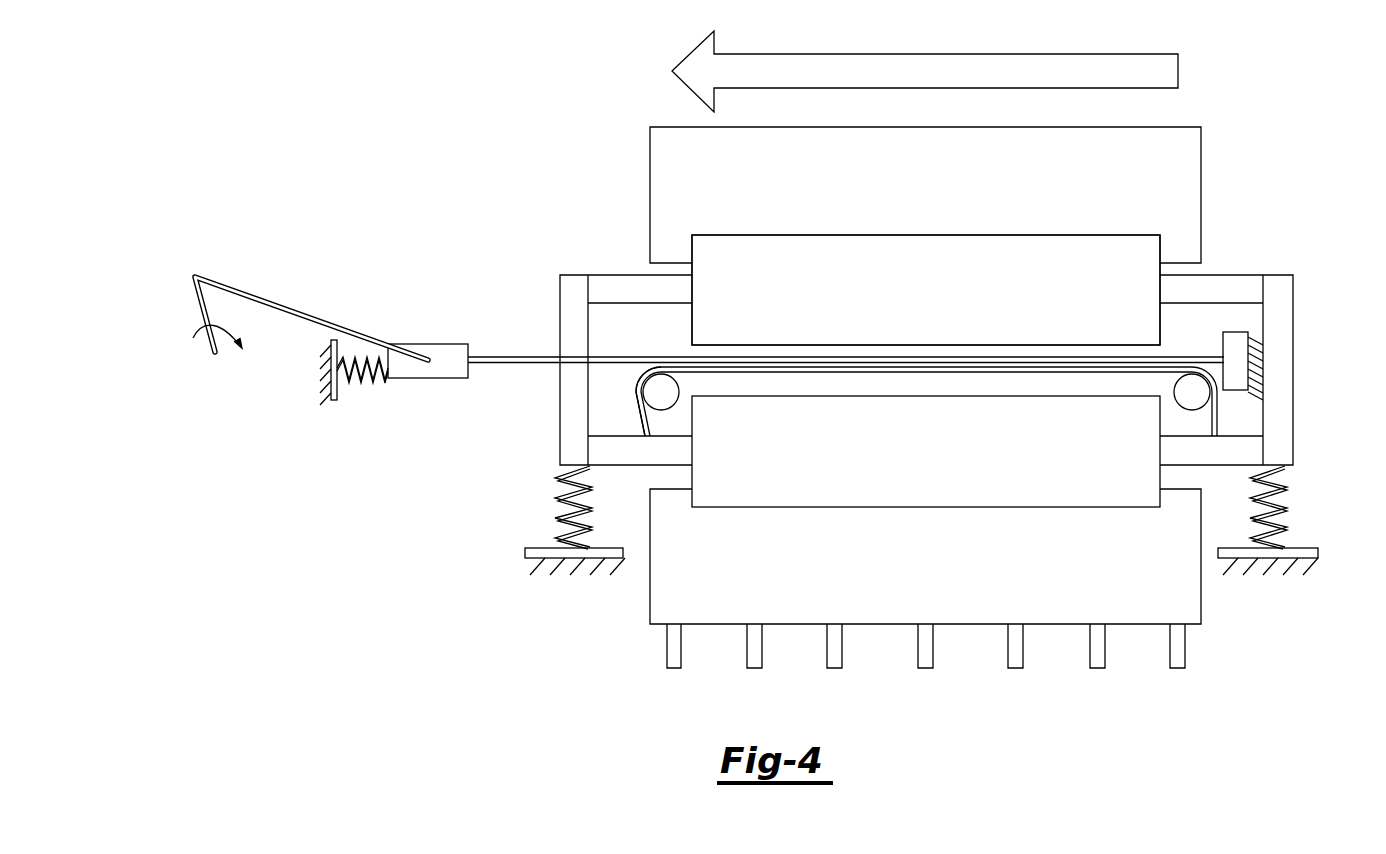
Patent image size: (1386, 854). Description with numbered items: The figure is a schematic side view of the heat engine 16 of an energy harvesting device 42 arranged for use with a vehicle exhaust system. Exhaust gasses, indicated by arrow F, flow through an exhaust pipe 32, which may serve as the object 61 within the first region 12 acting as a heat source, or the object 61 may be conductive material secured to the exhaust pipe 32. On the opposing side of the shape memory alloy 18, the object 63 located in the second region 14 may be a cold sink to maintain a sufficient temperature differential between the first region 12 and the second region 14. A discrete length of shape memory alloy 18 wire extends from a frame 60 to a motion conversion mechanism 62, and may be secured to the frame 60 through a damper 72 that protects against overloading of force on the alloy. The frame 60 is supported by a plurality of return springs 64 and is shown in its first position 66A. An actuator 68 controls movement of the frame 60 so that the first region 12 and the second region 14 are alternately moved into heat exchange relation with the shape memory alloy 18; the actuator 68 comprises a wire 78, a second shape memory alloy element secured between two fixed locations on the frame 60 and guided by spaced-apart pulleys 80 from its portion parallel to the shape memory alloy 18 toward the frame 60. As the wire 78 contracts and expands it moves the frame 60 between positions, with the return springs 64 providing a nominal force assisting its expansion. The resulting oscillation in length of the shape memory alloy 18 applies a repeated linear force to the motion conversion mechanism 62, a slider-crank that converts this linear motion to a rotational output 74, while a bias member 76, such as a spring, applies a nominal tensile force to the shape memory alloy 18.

The energy harvesting device 42 is at (135, 198).
The arrow indicating exhaust gas flow F is at (947, 54).
The exhaust pipe 32 is at (1201, 152).
The first region 12 is at (915, 194).
The object 61 is at (748, 234).
The heat engine 16 is at (431, 264).
The motion conversion mechanism 62 is at (428, 378).
The bias member 76 is at (352, 380).
The output 74 is at (262, 292).
The shape memory alloy 18 is at (515, 357).
The first position 66A is at (605, 236).
The frame 60 is at (1278, 413).
The damper 72 is at (1255, 357).
The wire 78 is at (1027, 374).
The pulleys 80 is at (660, 402).
The second region 14 is at (915, 466).
The object 63 is at (1201, 610).
The return springs 64 is at (562, 532).
The actuator 68 is at (616, 391).